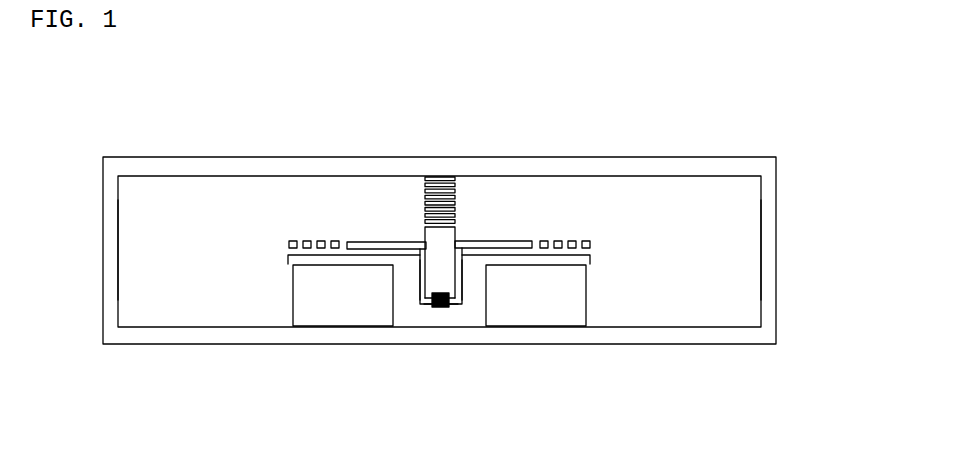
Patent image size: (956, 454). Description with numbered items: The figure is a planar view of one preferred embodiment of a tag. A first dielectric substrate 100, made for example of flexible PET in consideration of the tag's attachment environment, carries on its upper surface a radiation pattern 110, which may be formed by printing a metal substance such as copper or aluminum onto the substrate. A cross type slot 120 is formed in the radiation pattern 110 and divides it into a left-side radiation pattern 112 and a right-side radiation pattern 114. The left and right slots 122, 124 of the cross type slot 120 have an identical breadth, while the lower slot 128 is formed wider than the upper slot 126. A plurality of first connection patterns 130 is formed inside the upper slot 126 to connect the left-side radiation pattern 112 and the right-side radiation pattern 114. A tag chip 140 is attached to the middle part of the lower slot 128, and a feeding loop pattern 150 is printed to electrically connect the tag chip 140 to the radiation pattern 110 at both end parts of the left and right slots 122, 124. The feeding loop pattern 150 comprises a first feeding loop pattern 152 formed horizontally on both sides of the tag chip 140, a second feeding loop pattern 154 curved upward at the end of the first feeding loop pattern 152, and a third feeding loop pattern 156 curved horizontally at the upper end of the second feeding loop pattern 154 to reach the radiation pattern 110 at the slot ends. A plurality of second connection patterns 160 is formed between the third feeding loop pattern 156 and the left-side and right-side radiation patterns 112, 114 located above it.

The first dielectric substrate 100 is at (775, 207).
The radiation pattern 110 is at (439, 202).
The left-side radiation pattern 112 is at (127, 267).
The right-side radiation pattern 114 is at (753, 240).
The cross (+) type slot 120 is at (439, 265).
The left slot 122 is at (291, 263).
The right slot 124 is at (589, 263).
The upper slot 126 is at (472, 262).
The lower slot 128 is at (467, 305).
The first connection patterns 130 is at (449, 197).
The tag chip 140 is at (442, 308).
The feeding loop pattern 150 is at (435, 247).
The first feeding loop pattern 152 is at (429, 301).
The second feeding loop pattern 154 is at (418, 281).
The third feeding loop pattern 156 is at (498, 253).
The second connection patterns 160 is at (325, 240).